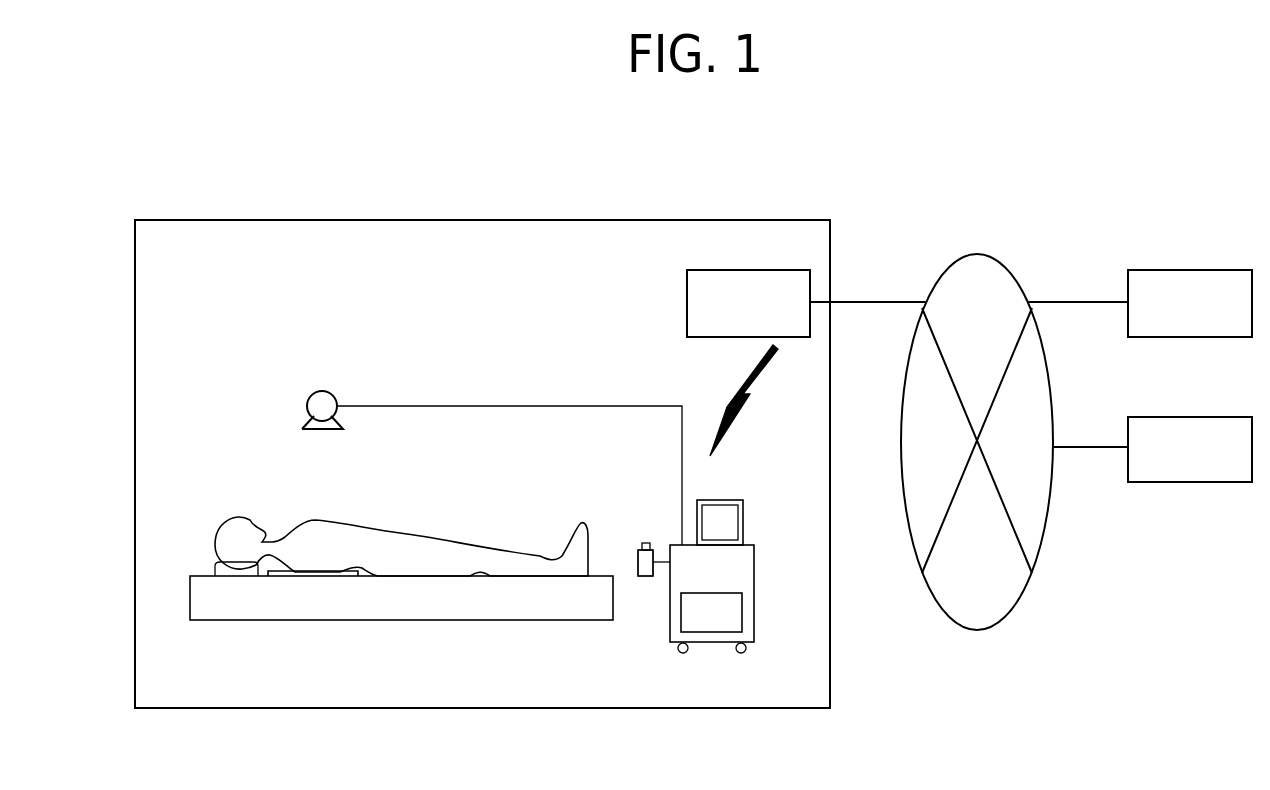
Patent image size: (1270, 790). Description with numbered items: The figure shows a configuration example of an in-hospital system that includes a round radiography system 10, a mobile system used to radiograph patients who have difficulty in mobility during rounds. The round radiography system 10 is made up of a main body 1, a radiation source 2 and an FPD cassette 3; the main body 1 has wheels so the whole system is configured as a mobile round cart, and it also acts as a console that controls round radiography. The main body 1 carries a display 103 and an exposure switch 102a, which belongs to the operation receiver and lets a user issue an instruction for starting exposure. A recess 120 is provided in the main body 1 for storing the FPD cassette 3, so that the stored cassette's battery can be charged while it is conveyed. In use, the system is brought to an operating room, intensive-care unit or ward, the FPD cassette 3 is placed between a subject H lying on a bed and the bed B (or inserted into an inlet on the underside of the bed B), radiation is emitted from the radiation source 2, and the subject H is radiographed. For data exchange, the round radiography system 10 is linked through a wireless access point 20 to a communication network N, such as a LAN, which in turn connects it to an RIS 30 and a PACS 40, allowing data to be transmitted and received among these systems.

The main body 1 is at (657, 528).
The radiation source 2 is at (318, 391).
The FPD cassette 3 is at (292, 580).
The round radiography system 10 is at (743, 533).
The wireless access point 20 is at (757, 270).
The RIS 30 is at (1218, 270).
The PACS 40 is at (1218, 417).
The exposure switch 102a is at (648, 578).
The display 103 is at (707, 538).
The recess 120 is at (722, 614).
The subject H is at (226, 523).
The bed B is at (245, 610).
The communication network N is at (1008, 268).